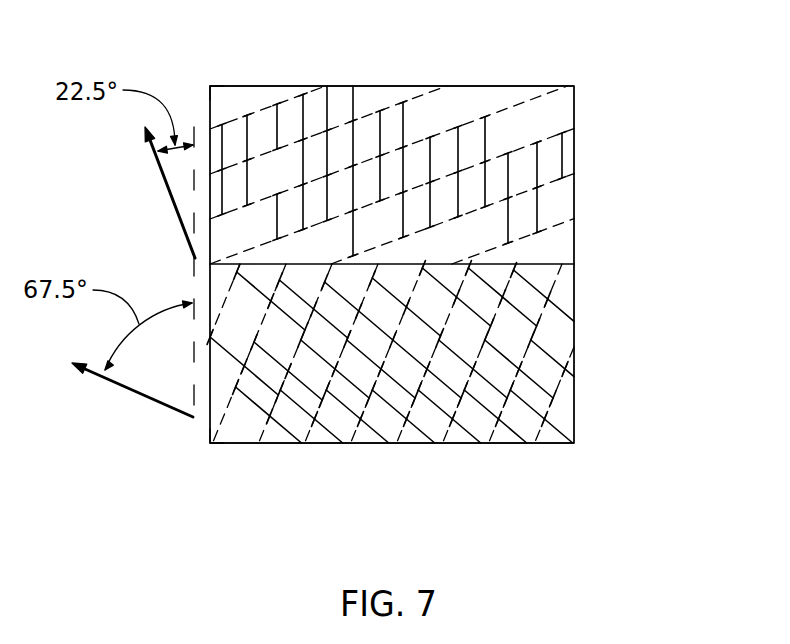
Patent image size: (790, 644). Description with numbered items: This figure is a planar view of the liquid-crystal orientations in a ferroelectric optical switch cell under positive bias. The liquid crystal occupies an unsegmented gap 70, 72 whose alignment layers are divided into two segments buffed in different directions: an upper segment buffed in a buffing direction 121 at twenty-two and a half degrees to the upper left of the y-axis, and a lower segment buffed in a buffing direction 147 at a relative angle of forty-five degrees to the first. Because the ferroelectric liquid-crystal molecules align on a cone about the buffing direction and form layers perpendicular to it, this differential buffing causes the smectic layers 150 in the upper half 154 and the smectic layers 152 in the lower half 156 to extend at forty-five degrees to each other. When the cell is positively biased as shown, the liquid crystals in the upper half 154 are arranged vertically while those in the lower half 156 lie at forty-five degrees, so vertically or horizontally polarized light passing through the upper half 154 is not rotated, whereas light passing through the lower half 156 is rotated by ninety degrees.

The liquid-crystal filled gap 70 is at (702, 529).
The liquid-crystal filled gap 72 is at (600, 515).
The buffing direction 121 is at (163, 182).
The buffing direction 147 is at (118, 388).
The smectic layers 150 is at (574, 150).
The smectic layers 152 is at (574, 332).
The upper half 154 is at (190, 96).
The lower half 156 is at (192, 434).